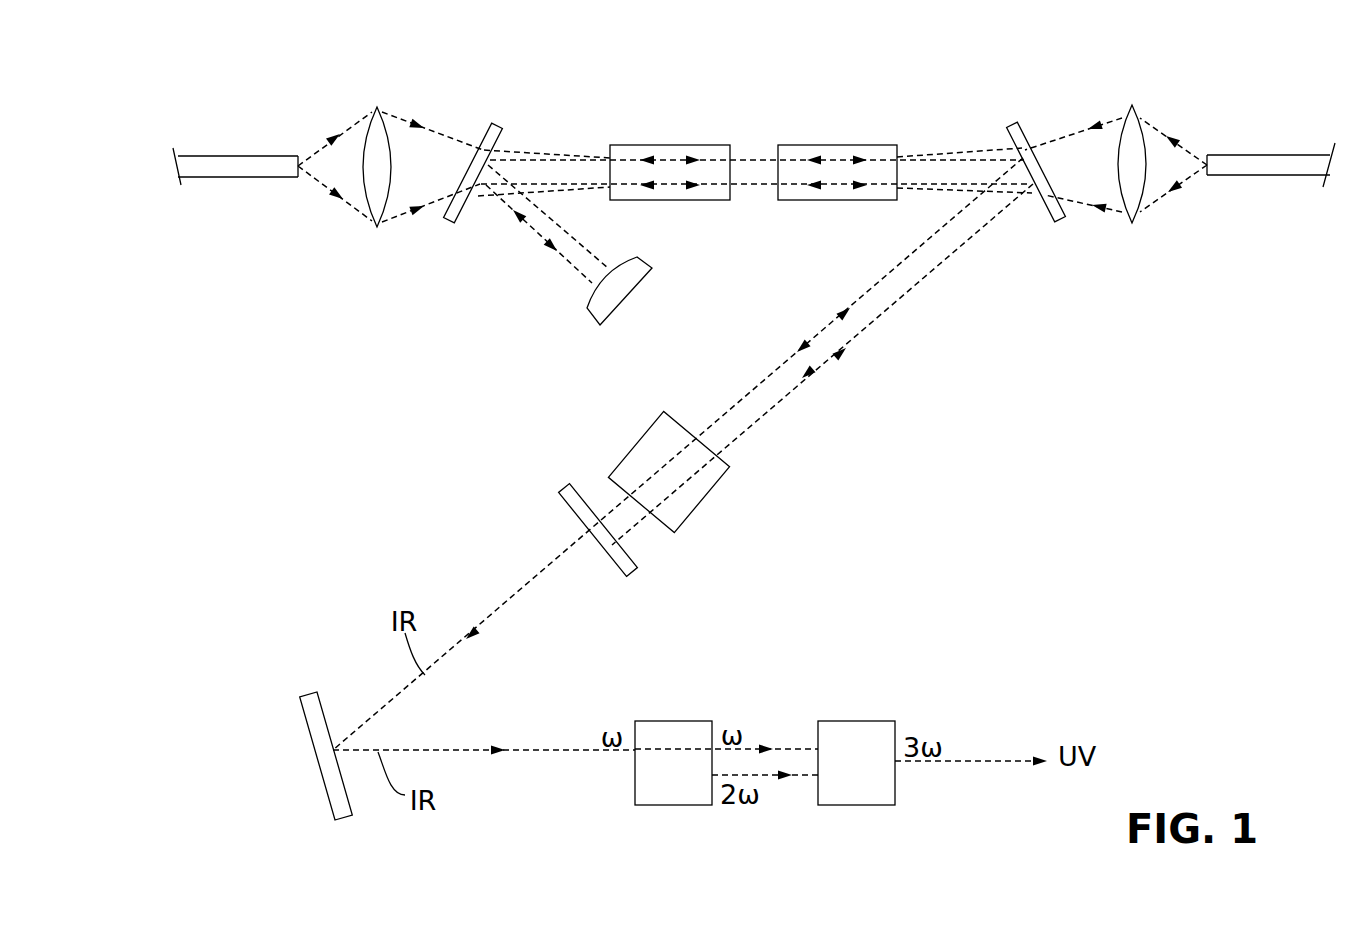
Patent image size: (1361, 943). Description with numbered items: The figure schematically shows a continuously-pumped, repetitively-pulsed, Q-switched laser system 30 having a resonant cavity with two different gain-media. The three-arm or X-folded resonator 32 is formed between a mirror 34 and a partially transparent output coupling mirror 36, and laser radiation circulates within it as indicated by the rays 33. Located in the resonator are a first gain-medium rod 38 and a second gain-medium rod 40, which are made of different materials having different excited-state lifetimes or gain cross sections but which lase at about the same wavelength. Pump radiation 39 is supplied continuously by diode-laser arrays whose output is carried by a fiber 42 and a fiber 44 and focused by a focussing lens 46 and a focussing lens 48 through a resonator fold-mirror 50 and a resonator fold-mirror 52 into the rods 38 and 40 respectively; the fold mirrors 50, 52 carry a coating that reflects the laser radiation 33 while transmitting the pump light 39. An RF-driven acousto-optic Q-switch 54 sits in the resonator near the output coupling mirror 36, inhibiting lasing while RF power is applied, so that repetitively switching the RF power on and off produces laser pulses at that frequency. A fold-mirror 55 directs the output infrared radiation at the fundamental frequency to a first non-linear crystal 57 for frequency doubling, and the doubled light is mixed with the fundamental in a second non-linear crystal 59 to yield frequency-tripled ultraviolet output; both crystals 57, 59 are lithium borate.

The laser system 30 is at (1165, 471).
The resonator 32 is at (553, 146).
The rays 33 is at (503, 207).
The mirror 34 is at (595, 318).
The output coupling mirror 36 is at (571, 513).
The first gain-medium rod 38 is at (650, 145).
The pump radiation 39 is at (448, 146).
The second gain-medium rod 40 is at (792, 145).
The fiber 42 is at (258, 156).
The fiber 44 is at (1250, 154).
The focussing lens 46 is at (362, 140).
The focussing lens 48 is at (1140, 126).
The resonator fold-mirror 50 is at (490, 126).
The resonator fold-mirror 52 is at (1032, 128).
The acousto-optic Q-switch 54 is at (687, 515).
The fold-mirror 55 is at (318, 770).
The first non-linear crystal 57 is at (672, 805).
The second non-linear crystal 59 is at (847, 805).